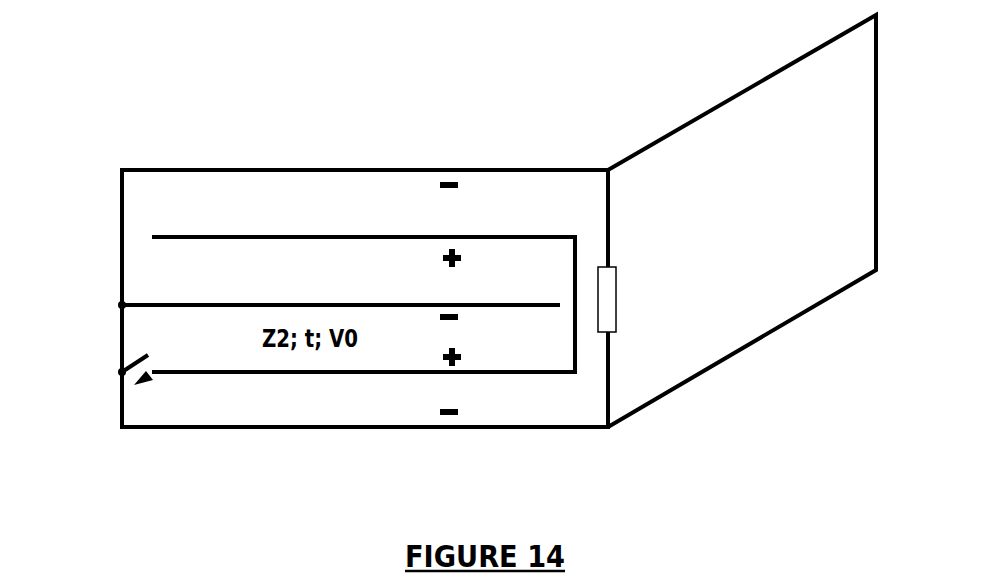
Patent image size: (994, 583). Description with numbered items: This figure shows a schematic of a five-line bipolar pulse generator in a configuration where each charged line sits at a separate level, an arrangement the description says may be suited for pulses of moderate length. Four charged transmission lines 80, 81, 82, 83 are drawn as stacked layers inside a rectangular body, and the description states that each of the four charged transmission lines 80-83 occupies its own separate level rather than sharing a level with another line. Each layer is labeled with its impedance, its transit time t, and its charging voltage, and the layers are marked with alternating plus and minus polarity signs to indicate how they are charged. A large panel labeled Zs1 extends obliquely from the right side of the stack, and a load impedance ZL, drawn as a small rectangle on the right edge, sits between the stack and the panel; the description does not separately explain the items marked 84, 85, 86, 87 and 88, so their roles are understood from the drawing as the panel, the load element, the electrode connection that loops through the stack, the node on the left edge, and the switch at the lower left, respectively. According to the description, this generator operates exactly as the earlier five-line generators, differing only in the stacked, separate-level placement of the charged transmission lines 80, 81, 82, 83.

The charged transmission line 80 is at (223, 415).
The charged transmission line 81 is at (377, 357).
The charged transmission line 82 is at (168, 262).
The charged transmission line 83 is at (210, 202).
The medium Zs1 84 is at (790, 105).
The load impedance ZL 85 is at (622, 325).
The electrode connection 86 is at (573, 292).
The electrode node 87 is at (122, 278).
The switch 88 is at (96, 374).